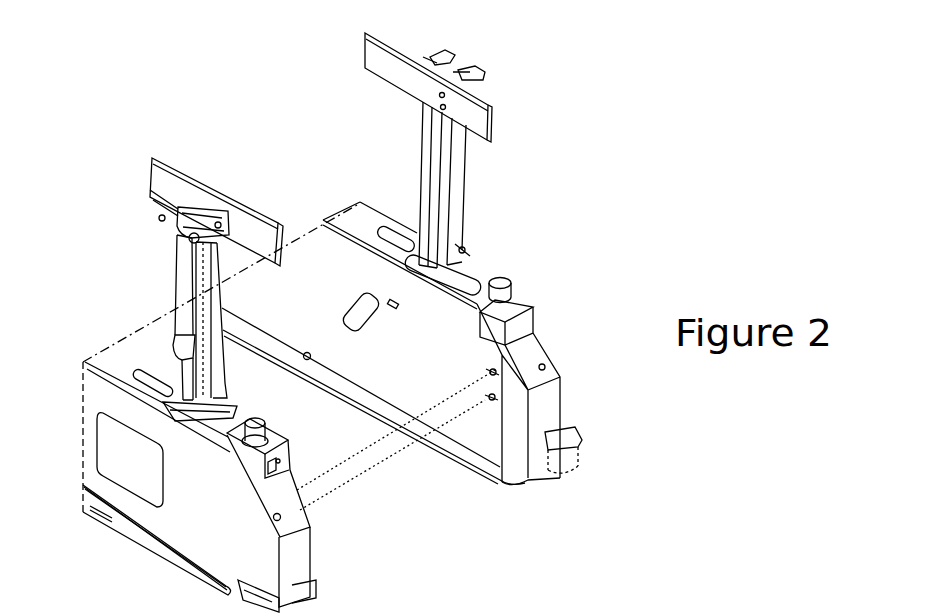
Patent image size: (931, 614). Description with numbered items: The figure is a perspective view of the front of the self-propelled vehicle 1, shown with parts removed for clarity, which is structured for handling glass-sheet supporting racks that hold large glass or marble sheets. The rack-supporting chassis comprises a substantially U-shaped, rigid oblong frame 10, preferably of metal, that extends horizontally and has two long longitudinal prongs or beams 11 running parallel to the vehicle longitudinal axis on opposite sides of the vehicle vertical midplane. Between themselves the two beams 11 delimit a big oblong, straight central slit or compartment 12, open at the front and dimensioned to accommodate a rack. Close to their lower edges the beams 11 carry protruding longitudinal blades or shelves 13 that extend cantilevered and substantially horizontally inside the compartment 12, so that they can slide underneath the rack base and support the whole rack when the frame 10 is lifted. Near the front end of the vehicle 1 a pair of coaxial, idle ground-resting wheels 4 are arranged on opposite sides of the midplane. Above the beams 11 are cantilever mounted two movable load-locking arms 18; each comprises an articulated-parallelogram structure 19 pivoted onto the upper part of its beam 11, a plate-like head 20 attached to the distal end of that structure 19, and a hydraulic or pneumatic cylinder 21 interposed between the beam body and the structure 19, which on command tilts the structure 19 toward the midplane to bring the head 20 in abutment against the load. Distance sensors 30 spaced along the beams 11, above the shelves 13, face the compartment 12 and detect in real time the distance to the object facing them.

The self-propelled vehicle 1 is at (598, 180).
The ground-resting wheels 4 is at (182, 571).
The rigid oblong frame 10 is at (85, 426).
The longitudinal prongs or beams 11 is at (123, 465).
The central slit or compartment 12 is at (392, 498).
The longitudinal blades or shelves 13 is at (300, 593).
The movable load-locking arms 18 is at (143, 167).
The articulated-parallelogram structure 19 is at (185, 275).
The plate-like head 20 is at (205, 196).
The hydraulic or pneumatic cylinder 21 is at (187, 368).
The distance sensors 30 is at (494, 374).